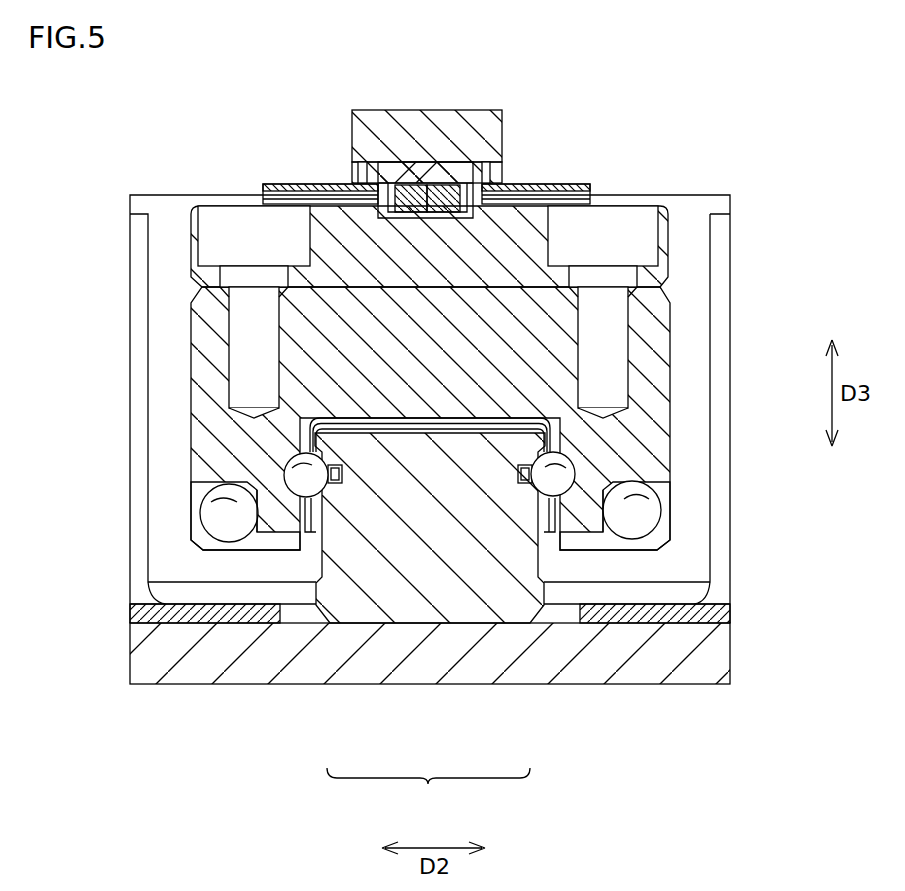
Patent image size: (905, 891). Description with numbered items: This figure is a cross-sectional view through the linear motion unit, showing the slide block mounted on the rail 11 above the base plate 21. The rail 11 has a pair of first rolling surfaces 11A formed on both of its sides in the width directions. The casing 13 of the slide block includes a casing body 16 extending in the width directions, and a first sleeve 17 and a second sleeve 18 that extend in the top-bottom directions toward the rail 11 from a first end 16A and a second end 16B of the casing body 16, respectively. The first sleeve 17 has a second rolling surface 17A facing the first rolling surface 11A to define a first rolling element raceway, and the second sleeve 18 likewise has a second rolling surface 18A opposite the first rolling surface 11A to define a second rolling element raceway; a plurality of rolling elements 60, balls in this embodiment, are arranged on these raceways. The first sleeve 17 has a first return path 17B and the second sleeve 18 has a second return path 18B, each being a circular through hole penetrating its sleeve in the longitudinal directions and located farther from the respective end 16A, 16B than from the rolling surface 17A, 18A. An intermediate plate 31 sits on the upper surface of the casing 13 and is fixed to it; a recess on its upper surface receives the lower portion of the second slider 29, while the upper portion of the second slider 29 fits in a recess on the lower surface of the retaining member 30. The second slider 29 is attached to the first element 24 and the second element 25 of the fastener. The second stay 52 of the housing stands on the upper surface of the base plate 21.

The rail 11 is at (462, 600).
The first rolling surface 11A is at (300, 460).
The casing 13 is at (428, 788).
The casing body 16 is at (428, 489).
The first end 16A is at (659, 359).
The second end 16B is at (202, 369).
The first sleeve 17 is at (590, 492).
The second rolling surface 17A is at (562, 470).
The first return path 17B is at (640, 500).
The second sleeve 18 is at (273, 497).
The second rolling surface 18A is at (293, 480).
The second return path 18B is at (240, 507).
The base plate 21 is at (718, 652).
The first element 24 is at (570, 188).
The second element 25 is at (300, 186).
The second slider 29 is at (437, 165).
The retaining member 30 is at (397, 128).
The intermediate plate 31 is at (514, 232).
The second stay 52 is at (138, 294).
The rolling element 60 is at (305, 478).